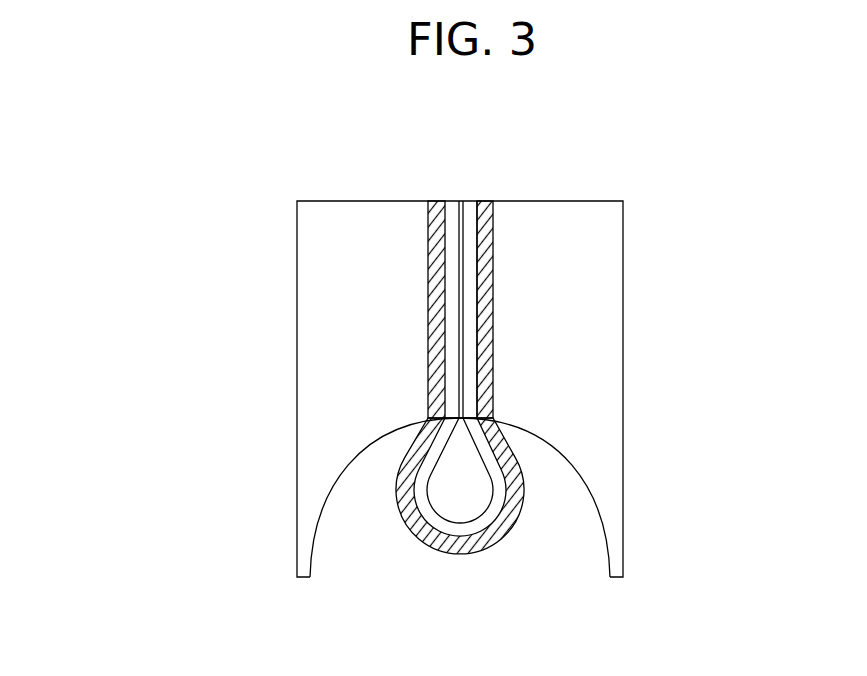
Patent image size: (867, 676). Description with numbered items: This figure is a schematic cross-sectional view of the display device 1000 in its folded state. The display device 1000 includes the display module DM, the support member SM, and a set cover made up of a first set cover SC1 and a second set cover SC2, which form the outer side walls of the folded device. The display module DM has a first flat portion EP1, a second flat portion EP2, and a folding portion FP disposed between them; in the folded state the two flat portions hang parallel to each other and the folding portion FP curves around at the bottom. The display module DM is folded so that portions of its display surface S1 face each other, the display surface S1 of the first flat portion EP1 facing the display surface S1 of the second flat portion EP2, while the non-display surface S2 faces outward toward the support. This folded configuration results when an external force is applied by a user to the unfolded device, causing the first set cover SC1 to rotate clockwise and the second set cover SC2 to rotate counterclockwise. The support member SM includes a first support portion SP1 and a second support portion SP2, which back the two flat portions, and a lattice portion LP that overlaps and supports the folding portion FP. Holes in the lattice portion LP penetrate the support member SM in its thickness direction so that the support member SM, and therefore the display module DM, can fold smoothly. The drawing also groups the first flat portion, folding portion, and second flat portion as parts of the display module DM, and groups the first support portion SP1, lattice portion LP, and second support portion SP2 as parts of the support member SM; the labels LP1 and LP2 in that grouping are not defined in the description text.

The display device 1000 is at (491, 338).
The display module DM is at (280, 414).
The first flat portion LP1 is at (282, 322).
The folding portion FP is at (435, 532).
The second flat portion LP2 is at (284, 352).
The support member SM is at (383, 414).
The first support portion SP1 is at (430, 362).
The lattice portion LP is at (483, 545).
The second support portion SP2 is at (493, 362).
The first flat portion EP1 is at (450, 247).
The second flat portion EP2 is at (470, 248).
The display surface S1 is at (463, 285).
The non-display surface S2 is at (480, 322).
The first set cover SC1 is at (320, 398).
The second set cover SC2 is at (605, 403).